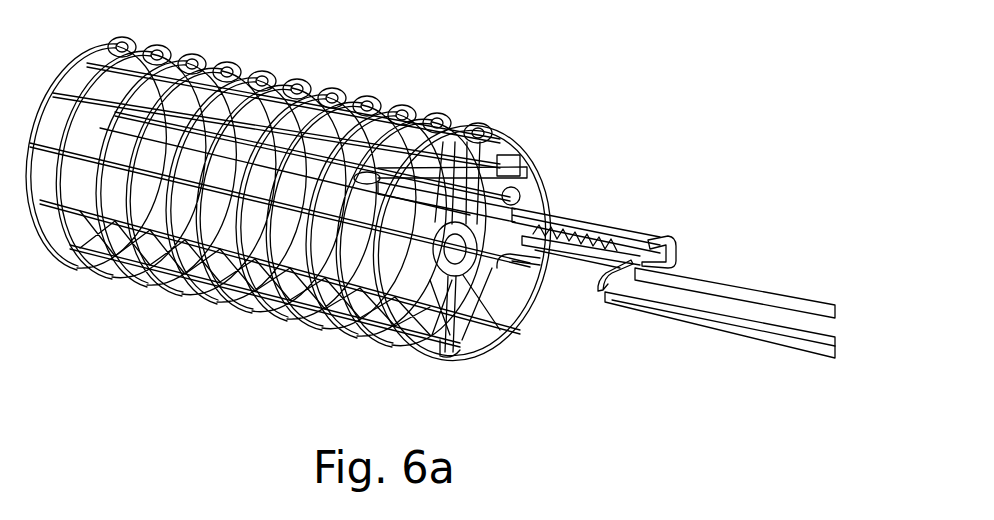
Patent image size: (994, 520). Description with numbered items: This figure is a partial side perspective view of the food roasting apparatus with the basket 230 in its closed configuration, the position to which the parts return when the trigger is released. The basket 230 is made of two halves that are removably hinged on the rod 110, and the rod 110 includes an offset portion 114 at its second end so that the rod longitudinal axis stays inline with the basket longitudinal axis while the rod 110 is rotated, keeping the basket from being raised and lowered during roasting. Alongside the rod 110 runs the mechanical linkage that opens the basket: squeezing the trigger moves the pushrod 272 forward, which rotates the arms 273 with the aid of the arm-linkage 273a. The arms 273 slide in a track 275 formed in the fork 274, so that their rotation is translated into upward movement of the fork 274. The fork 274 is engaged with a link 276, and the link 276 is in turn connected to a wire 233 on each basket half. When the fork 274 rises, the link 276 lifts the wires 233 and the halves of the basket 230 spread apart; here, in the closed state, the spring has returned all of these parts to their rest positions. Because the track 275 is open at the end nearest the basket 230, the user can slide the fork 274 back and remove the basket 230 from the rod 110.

The basket 230 is at (497, 348).
The offset portion 114 is at (470, 133).
The wire 233 is at (523, 178).
The link 276 is at (503, 153).
The track 275 is at (610, 247).
The arm-linkage 273a is at (557, 250).
The fork 274 is at (660, 237).
The pushrod 272 is at (805, 300).
The rod 110 is at (780, 343).
The arms 273 is at (600, 286).